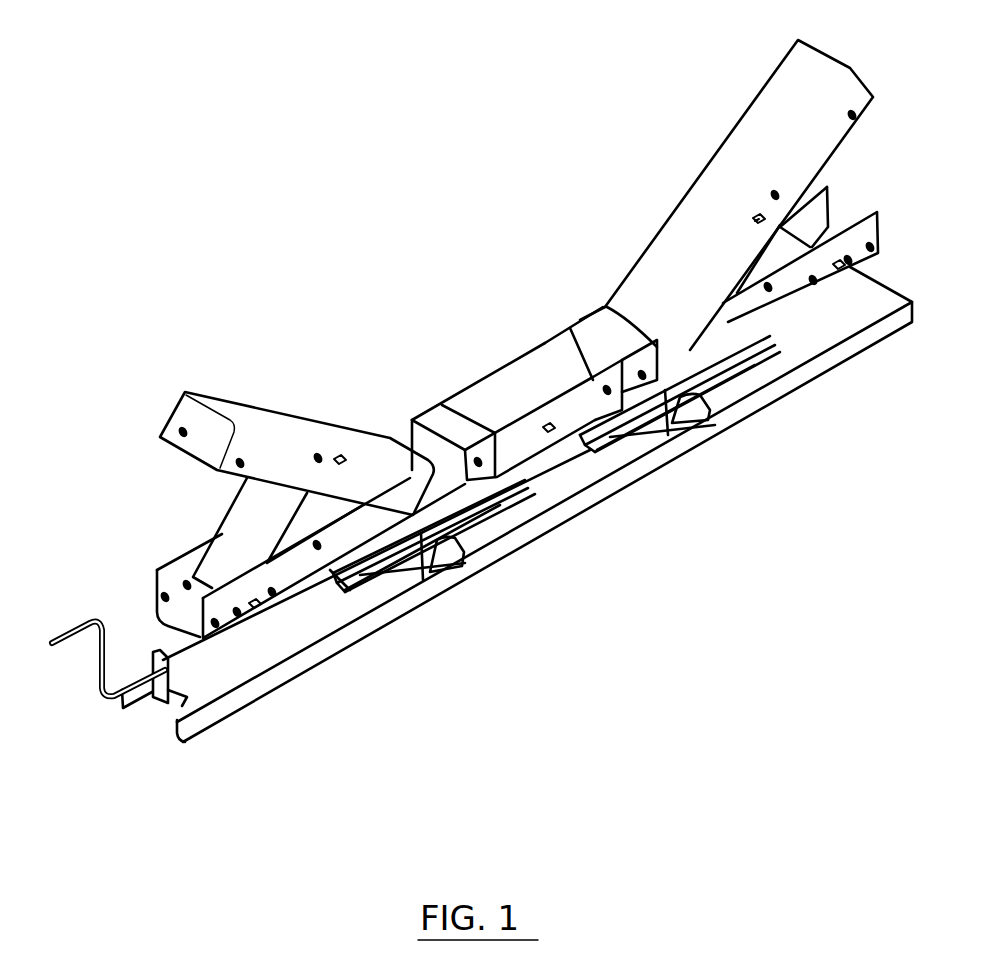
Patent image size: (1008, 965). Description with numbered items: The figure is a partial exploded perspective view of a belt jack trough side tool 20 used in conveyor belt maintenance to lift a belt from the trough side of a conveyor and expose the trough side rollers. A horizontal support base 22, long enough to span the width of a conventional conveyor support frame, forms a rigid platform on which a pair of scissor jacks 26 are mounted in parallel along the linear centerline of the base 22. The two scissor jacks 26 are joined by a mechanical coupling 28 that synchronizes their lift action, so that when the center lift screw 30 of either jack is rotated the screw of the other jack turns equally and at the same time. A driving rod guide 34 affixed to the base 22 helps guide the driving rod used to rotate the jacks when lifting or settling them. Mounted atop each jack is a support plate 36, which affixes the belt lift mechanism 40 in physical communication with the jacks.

The belt jack trough side tool 20 is at (482, 417).
The horizontal support base 22 is at (828, 357).
The scissor jack 26 is at (692, 405).
The mechanical coupling 28 is at (545, 470).
The center lift screw 30 is at (388, 566).
The driving rod guide 34 is at (183, 692).
The support plate 36 is at (700, 440).
The belt lift mechanism 40 is at (165, 392).